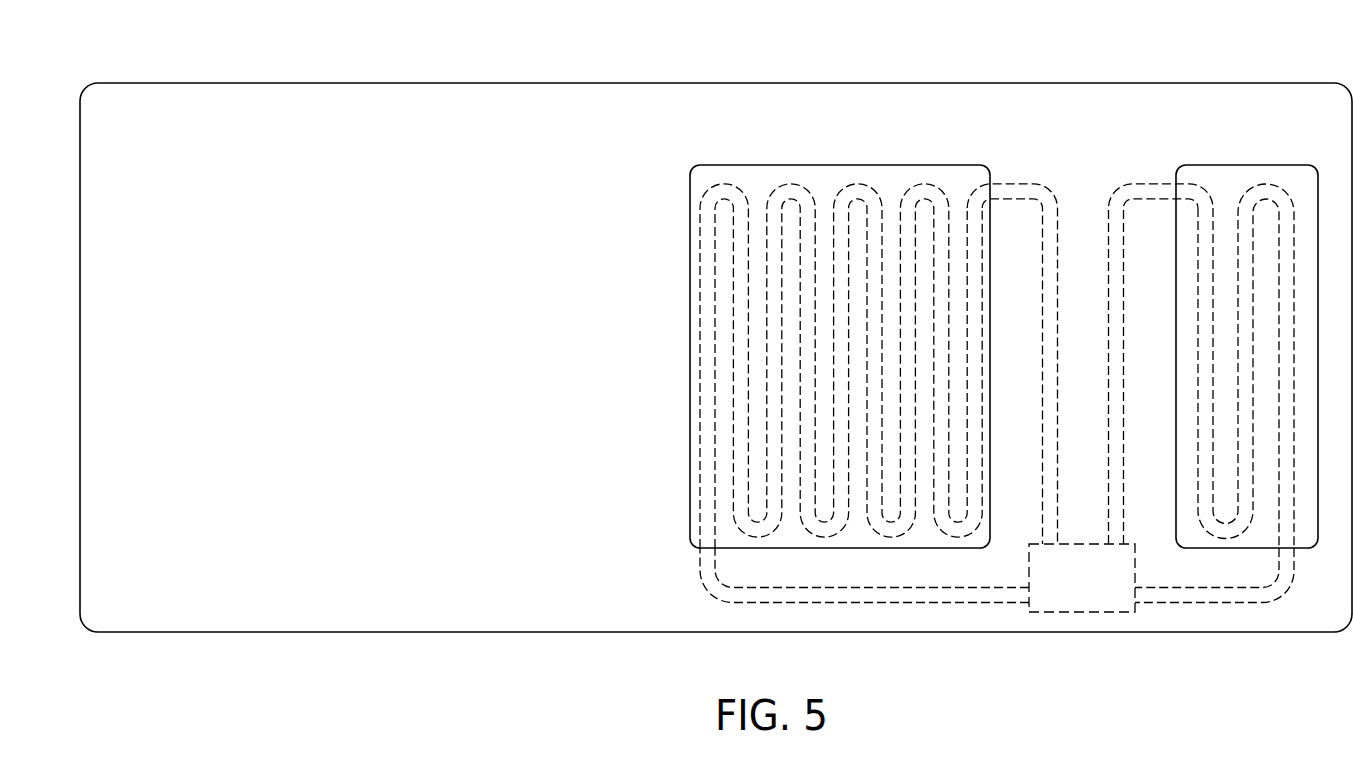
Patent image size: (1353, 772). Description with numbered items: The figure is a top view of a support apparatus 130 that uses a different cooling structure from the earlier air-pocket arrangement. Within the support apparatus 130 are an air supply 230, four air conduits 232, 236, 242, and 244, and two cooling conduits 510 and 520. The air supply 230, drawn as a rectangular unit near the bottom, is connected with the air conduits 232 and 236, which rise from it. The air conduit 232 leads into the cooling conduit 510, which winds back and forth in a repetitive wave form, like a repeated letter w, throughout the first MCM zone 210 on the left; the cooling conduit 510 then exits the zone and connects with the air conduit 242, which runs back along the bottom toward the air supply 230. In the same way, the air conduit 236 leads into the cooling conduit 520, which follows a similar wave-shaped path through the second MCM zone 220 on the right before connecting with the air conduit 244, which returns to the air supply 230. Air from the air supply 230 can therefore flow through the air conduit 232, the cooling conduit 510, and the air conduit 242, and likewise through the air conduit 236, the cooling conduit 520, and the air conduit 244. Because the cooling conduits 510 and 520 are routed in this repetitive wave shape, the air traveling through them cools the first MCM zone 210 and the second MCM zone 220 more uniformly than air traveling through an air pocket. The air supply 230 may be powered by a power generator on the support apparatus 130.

The support apparatus 130 is at (1125, 83).
The first MCM zone 210 is at (750, 165).
The second MCM zone 220 is at (1278, 165).
The air supply 230 is at (1085, 612).
The air conduit 232 is at (1013, 184).
The air conduit 236 is at (1152, 184).
The air conduit 242 is at (972, 604).
The air conduit 244 is at (1193, 604).
The cooling conduit 510 is at (856, 186).
The cooling conduit 520 is at (1190, 184).